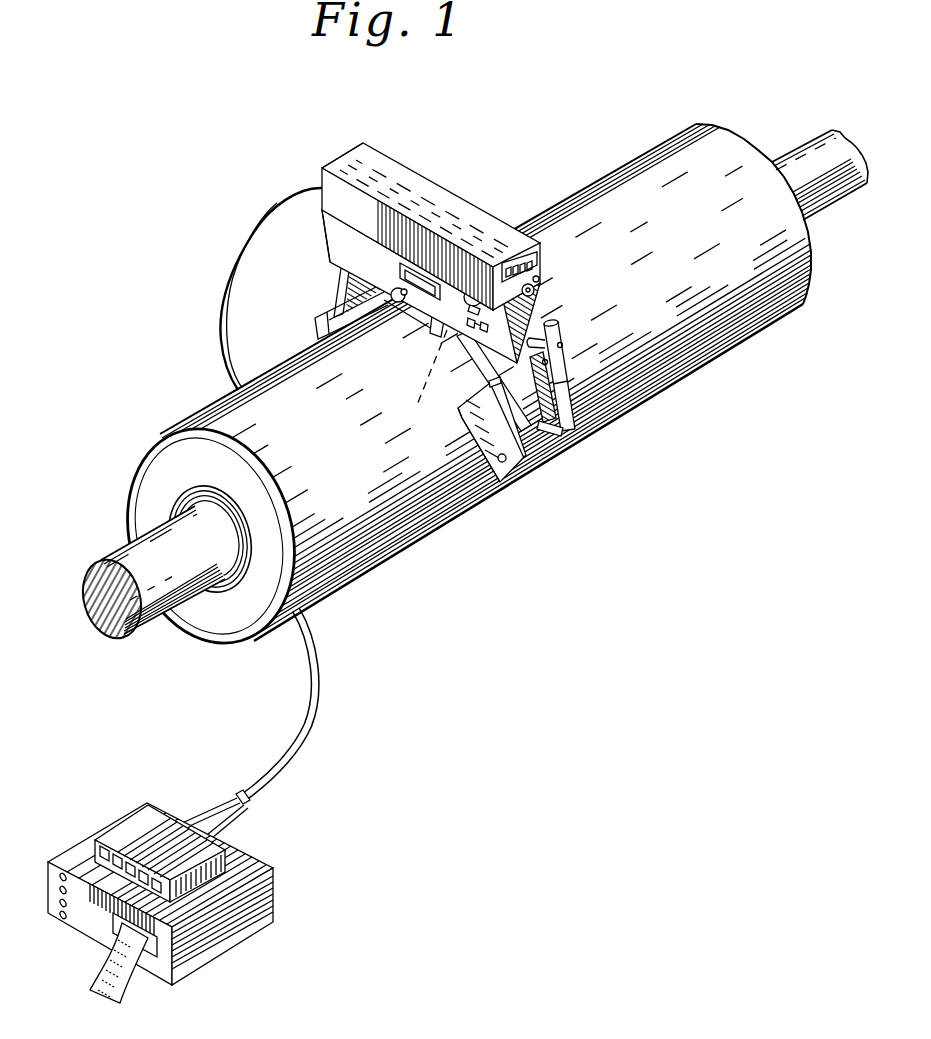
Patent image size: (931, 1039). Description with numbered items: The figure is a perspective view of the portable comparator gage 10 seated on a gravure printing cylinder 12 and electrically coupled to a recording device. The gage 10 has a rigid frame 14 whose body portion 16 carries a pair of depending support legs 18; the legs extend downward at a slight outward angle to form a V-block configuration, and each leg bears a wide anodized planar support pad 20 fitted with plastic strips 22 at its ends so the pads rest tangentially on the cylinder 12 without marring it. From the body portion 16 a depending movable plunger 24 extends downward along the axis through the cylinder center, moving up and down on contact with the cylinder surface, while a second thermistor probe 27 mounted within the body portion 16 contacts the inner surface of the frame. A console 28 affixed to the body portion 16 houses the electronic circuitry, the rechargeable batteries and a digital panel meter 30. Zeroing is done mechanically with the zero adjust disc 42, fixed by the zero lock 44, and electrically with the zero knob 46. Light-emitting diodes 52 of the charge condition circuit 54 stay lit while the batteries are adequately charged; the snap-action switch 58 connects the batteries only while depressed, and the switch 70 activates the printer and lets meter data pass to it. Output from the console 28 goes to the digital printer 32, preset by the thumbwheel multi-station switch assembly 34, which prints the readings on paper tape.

The portable comparator gage 10 is at (472, 134).
The gravure printing cylinder 12 is at (753, 334).
The rigid frame 14 is at (297, 165).
The body portion 16 is at (325, 240).
The support legs 18 is at (338, 287).
The planar support pad 20 is at (313, 332).
The plastic strips 22 is at (381, 298).
The movable plunger 24 is at (432, 332).
The second thermistor probe 27 is at (417, 379).
The console 28 is at (474, 204).
The digital panel meter 30 is at (539, 246).
The digital printer 32 is at (244, 932).
The thumbwheel multi-station switch assembly 34 is at (117, 826).
The zero adjust disc 42 is at (397, 277).
The zero lock 44 is at (397, 302).
The zero knob 46 is at (465, 289).
The light-emitting diodes 52 is at (538, 278).
The charge condition circuit 54 is at (534, 296).
The snap-action switch 58 is at (567, 383).
The switch 70 is at (560, 342).